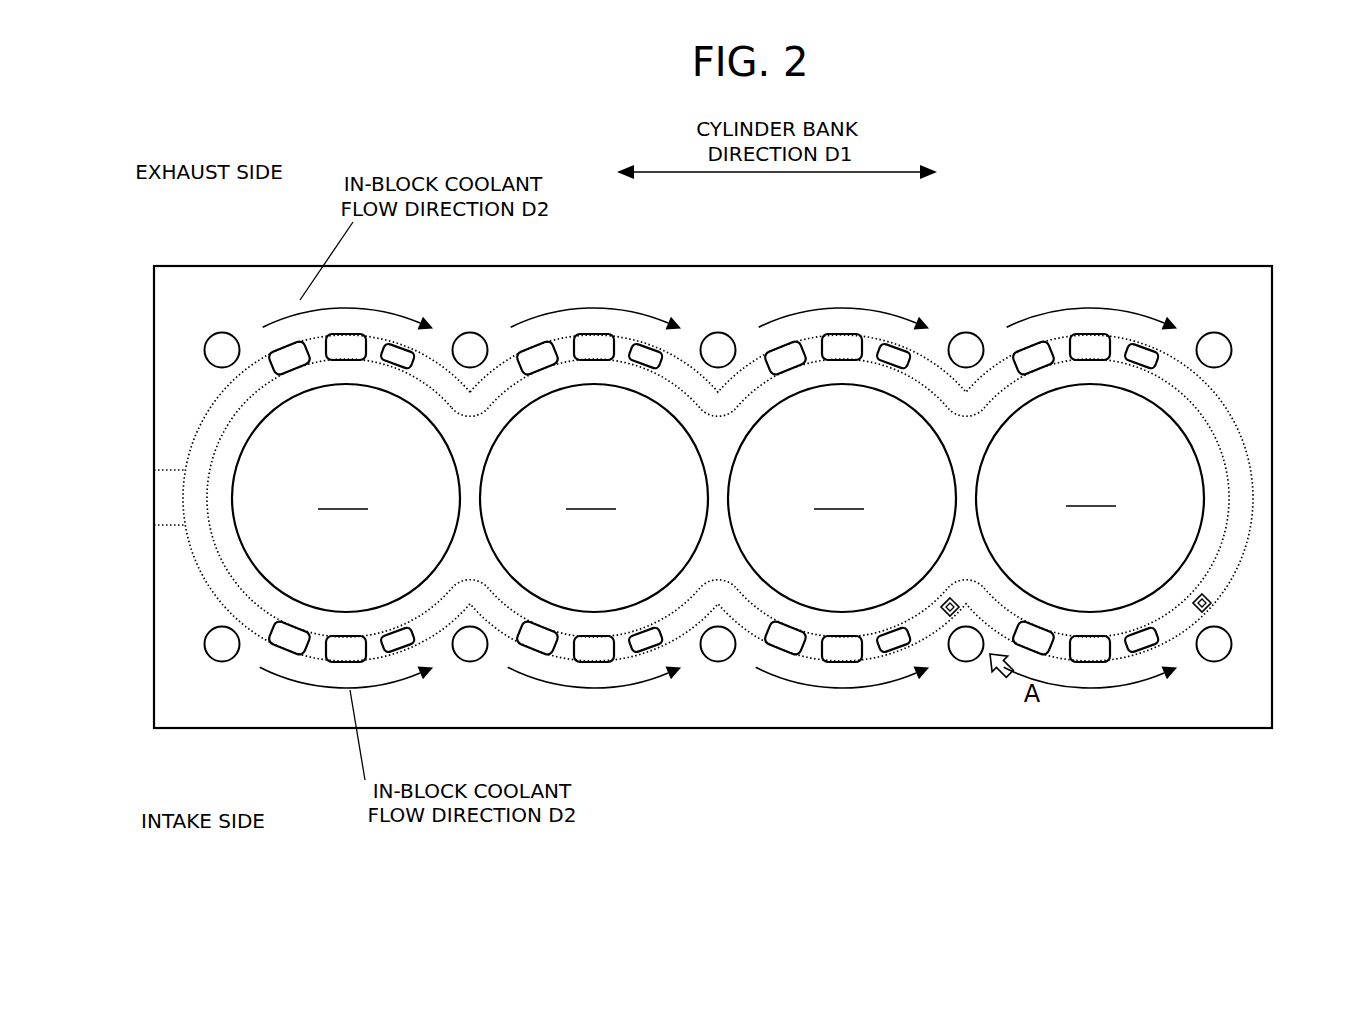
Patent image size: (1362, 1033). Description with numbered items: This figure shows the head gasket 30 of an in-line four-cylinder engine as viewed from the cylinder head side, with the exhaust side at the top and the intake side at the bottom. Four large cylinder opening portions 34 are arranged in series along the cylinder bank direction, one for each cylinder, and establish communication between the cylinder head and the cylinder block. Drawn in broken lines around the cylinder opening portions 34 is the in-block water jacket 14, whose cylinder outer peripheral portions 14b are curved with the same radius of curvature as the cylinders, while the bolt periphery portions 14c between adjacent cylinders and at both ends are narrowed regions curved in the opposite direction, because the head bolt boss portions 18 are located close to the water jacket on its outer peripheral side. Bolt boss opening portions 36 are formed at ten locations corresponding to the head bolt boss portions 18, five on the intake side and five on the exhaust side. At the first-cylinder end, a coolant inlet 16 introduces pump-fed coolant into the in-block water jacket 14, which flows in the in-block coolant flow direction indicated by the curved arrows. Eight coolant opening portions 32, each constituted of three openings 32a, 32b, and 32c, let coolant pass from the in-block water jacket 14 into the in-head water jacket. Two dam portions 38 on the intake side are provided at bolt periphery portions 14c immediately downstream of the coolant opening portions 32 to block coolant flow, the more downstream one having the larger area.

The head gasket 30 is at (1282, 248).
The in-block water jacket 14 is at (1260, 445).
The cylinder outer peripheral portion 14b is at (310, 337).
The bolt periphery portion 14c is at (473, 395).
The coolant inlet 16 is at (168, 500).
The head bolt boss portion 18 is at (213, 640).
The cylinder opening portion 34 is at (244, 452).
The bolt boss opening portion 36 is at (222, 350).
The coolant opening portion 32 is at (356, 318).
The opening 32a is at (785, 640).
The opening 32b is at (843, 652).
The opening 32c is at (893, 642).
The dam portion 38 is at (1128, 553).